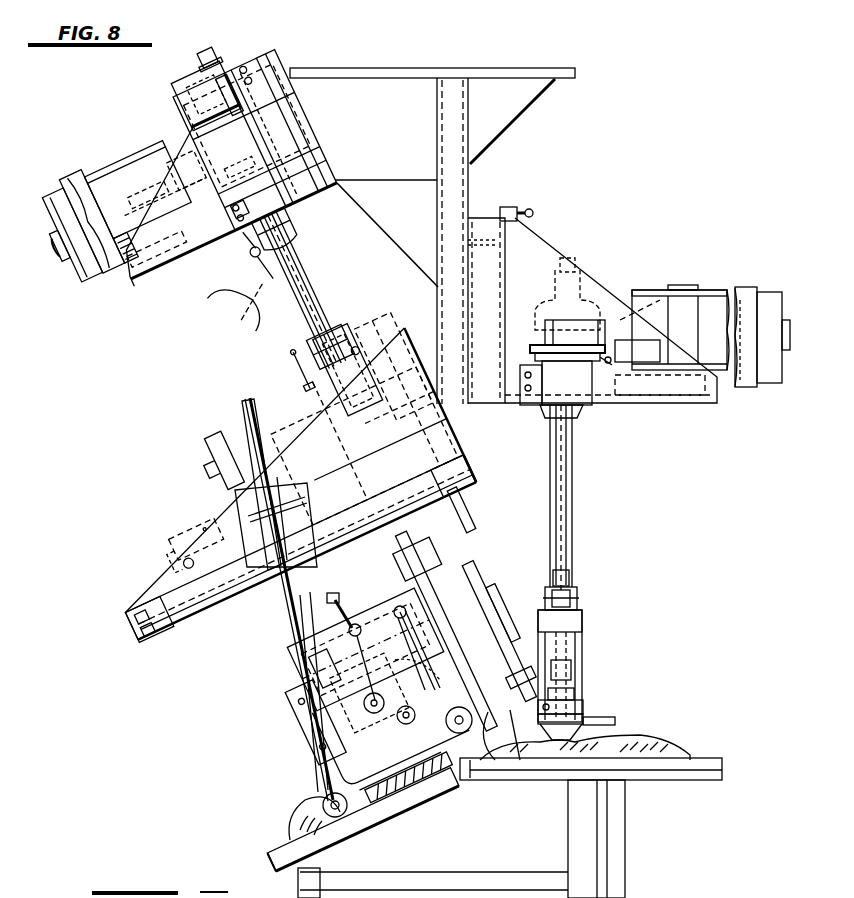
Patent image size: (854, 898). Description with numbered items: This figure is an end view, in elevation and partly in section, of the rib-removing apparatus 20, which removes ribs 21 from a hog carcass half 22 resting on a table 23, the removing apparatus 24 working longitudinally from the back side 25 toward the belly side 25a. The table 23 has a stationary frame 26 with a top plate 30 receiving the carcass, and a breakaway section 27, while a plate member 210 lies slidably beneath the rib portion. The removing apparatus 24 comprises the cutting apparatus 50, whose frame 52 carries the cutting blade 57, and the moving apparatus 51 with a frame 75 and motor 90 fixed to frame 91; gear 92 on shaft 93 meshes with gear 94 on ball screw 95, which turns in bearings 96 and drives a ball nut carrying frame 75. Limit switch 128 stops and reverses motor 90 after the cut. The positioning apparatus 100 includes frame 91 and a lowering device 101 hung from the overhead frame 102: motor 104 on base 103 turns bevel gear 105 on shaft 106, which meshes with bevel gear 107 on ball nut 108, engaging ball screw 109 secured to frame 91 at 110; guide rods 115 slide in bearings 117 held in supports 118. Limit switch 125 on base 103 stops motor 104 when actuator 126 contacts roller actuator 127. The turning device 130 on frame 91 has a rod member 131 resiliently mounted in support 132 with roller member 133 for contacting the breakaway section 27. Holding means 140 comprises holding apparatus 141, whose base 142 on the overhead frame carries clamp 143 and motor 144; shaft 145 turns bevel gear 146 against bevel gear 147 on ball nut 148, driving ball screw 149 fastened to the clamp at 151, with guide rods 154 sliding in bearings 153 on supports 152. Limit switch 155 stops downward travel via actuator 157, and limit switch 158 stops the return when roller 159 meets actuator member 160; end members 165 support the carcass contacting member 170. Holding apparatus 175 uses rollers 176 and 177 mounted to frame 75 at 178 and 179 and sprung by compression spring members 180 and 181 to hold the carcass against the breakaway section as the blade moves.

The rib-removing apparatus 20 is at (677, 203).
The ribs 21 is at (392, 725).
The hog carcass half 22 is at (298, 810).
The table 23 is at (457, 800).
The removing apparatus 24 is at (194, 432).
The back side 25 is at (678, 735).
The belly side 25a is at (290, 828).
The stationary frame 26 is at (735, 780).
The breakaway section 27 is at (365, 838).
The top plate 30 is at (652, 760).
The cutting apparatus 50 is at (515, 657).
The moving apparatus 51 is at (272, 609).
The frame 52 is at (497, 645).
The cutting blade 57 is at (521, 762).
The frame 75 is at (470, 540).
The motor 90 is at (242, 406).
The frame 91 is at (186, 513).
The gear 92 is at (382, 345).
The shaft 93 is at (415, 340).
The gear 94 is at (471, 514).
The ball screw 95 is at (471, 467).
The bearings 96 is at (155, 634).
The positioning apparatus 100 is at (191, 314).
The lowering device 101 is at (170, 138).
The overhead frame 102 is at (505, 76).
The base 103 is at (154, 278).
The motor 104 is at (94, 180).
The bevel gear 105 is at (199, 182).
The shaft 106 is at (162, 197).
The bevel gear 107 is at (306, 148).
The ball nut 108 is at (252, 146).
The ball screw 109 is at (300, 265).
The connection 110 is at (314, 356).
The guide rods 115 is at (212, 62).
The bearings 117 is at (243, 70).
The supports 118 is at (200, 96).
The limit switch 125 is at (240, 293).
The actuator 126 is at (280, 363).
The roller actuator 127 is at (226, 296).
The limit switch 128 is at (162, 549).
The turning device 130 is at (263, 631).
The rod member 131 is at (350, 548).
The support 132 is at (250, 543).
The roller member 133 is at (268, 856).
The holding means 140 is at (666, 649).
The holding apparatus 141 is at (587, 543).
The base 142 is at (540, 250).
The clamp 143 is at (585, 706).
The motor 144 is at (745, 296).
The shaft 145 is at (731, 294).
The bevel gear 146 is at (690, 279).
The bevel gear 147 is at (586, 335).
The ball nut 148 is at (582, 365).
The ball screw 149 is at (566, 478).
The fastening 151 is at (578, 602).
The supports 152 is at (543, 414).
The bearings 153 is at (578, 410).
The guide rods 154 is at (573, 516).
The limit switch 155 is at (658, 362).
The actuator 157 is at (624, 338).
The limit switch 158 is at (510, 207).
The roller 159 is at (534, 211).
The actuator member 160 is at (541, 315).
The end members 165 is at (578, 648).
The carcass contacting member 170 is at (615, 720).
The holding apparatus 175 is at (342, 755).
The roller 176 is at (434, 720).
The roller 177 is at (504, 762).
The roller mounting 178 is at (312, 736).
The roller mounting 179 is at (386, 680).
The compression spring member 180 is at (366, 646).
The compression spring member 181 is at (435, 650).
The plate member 210 is at (412, 792).